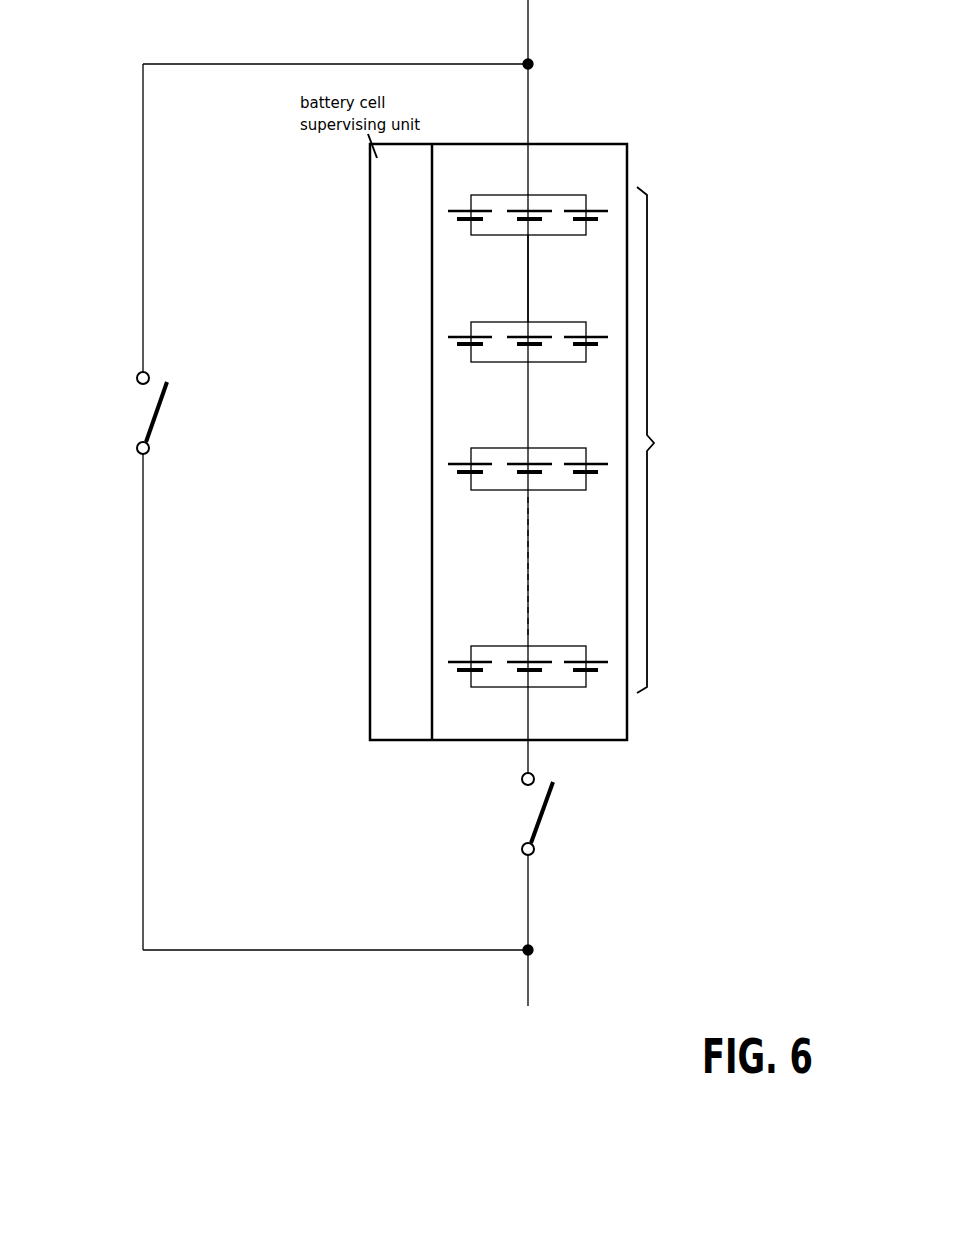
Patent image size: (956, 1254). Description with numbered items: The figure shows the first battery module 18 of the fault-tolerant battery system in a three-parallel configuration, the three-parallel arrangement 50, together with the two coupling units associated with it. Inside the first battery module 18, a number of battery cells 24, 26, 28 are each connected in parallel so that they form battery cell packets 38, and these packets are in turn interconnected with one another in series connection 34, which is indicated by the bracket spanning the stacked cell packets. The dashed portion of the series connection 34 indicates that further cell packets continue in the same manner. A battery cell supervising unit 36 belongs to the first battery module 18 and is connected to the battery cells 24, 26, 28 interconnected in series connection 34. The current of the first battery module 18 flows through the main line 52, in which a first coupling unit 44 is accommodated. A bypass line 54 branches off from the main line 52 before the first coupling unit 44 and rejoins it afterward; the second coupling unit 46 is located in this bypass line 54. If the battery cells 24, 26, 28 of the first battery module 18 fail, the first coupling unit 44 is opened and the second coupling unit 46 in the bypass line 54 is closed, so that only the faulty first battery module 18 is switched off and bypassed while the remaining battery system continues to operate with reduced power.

The first battery module 18 is at (471, 720).
The battery cell 24 is at (482, 160).
The battery cell 26 is at (514, 207).
The battery cell 28 is at (598, 207).
The series connection 34 is at (661, 440).
The battery cell supervising unit 36 is at (392, 374).
The battery cell packet 38 is at (470, 374).
The first coupling unit 44 is at (545, 813).
The second coupling unit 46 is at (152, 410).
The 3p arrangement 50 is at (515, 511).
The main line 52 is at (528, 81).
The bypass line 54 is at (143, 502).